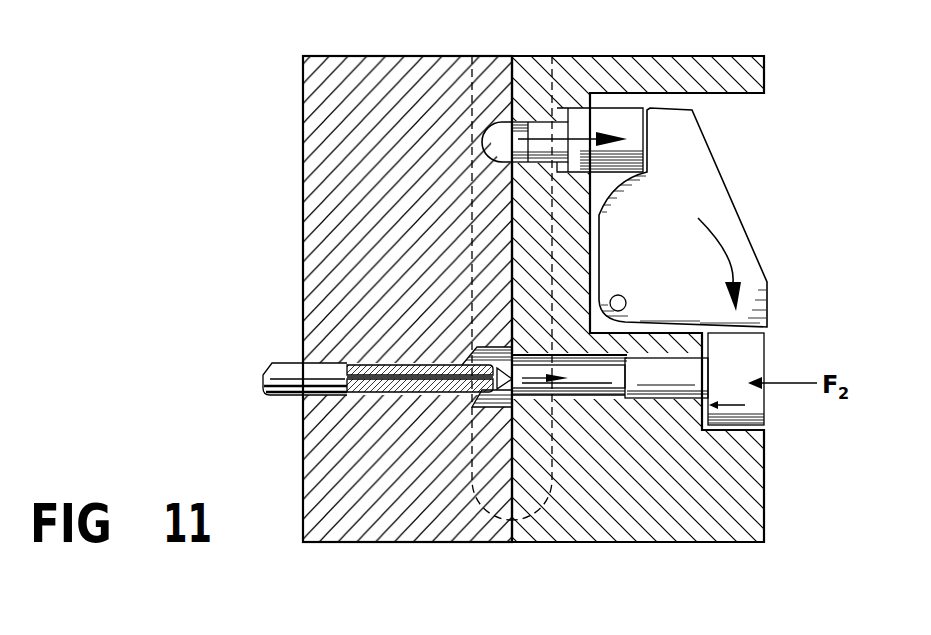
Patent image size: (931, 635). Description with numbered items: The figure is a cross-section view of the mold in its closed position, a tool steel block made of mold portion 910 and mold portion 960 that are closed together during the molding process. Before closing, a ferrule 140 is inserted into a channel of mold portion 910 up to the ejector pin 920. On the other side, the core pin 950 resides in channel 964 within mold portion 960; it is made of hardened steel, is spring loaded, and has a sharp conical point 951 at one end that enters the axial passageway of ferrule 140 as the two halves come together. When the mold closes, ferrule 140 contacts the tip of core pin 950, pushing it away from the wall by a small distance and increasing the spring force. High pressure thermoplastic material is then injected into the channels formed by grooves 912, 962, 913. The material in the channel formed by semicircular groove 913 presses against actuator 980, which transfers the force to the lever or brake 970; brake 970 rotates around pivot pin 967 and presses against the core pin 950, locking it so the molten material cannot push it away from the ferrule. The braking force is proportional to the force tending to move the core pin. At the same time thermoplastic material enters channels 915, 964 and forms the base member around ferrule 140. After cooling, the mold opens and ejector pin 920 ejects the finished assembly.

The mold portion 910 is at (300, 500).
The mold portion 960 is at (768, 502).
The groove 912 is at (472, 78).
The groove 962 is at (552, 74).
The semicircular groove 913 is at (497, 137).
The actuator 980 is at (623, 106).
The lever (brake) 970 is at (734, 200).
The pivot pin 967 is at (617, 294).
The core pin 950 is at (768, 367).
The channel 964 is at (570, 397).
The ejector pin 920 is at (288, 370).
The ferrule 140 is at (397, 355).
The channel 915 is at (478, 348).
The conical point 951 is at (498, 390).